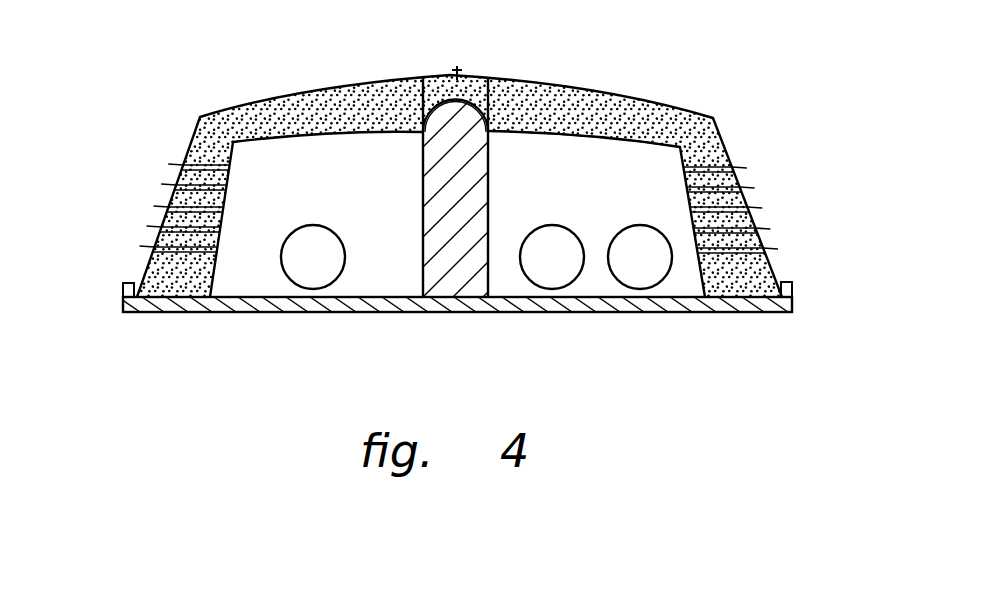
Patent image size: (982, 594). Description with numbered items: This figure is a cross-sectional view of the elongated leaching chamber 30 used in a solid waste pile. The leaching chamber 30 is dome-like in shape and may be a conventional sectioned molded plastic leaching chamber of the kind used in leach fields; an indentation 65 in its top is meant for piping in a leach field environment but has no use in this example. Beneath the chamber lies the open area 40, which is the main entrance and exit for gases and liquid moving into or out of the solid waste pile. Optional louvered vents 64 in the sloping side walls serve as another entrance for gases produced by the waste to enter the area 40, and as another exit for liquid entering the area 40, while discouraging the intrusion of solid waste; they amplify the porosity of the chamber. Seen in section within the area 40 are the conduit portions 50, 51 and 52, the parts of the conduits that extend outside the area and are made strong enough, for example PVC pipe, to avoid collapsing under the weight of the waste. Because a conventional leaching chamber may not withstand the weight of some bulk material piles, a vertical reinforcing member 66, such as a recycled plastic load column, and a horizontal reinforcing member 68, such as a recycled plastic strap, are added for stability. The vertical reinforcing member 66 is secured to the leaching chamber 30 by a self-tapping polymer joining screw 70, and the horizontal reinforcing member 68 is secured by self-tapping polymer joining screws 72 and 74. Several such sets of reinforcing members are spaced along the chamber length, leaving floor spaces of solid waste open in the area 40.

The elongated leaching chamber 30 is at (637, 97).
The area 40 is at (594, 180).
The portion of conduit 50 is at (292, 286).
The portion of conduit 51 is at (572, 280).
The portion of conduit 52 is at (660, 280).
The louvered vents 64 is at (138, 188).
The indentation 65 is at (474, 98).
The vertical reinforcing member 66 is at (430, 167).
The horizontal reinforcing member 68 is at (452, 300).
The self-tapping polymer joining screw 70 is at (459, 78).
The self-tapping polymer joining screw 72 is at (130, 314).
The self-tapping polymer joining screw 74 is at (785, 312).